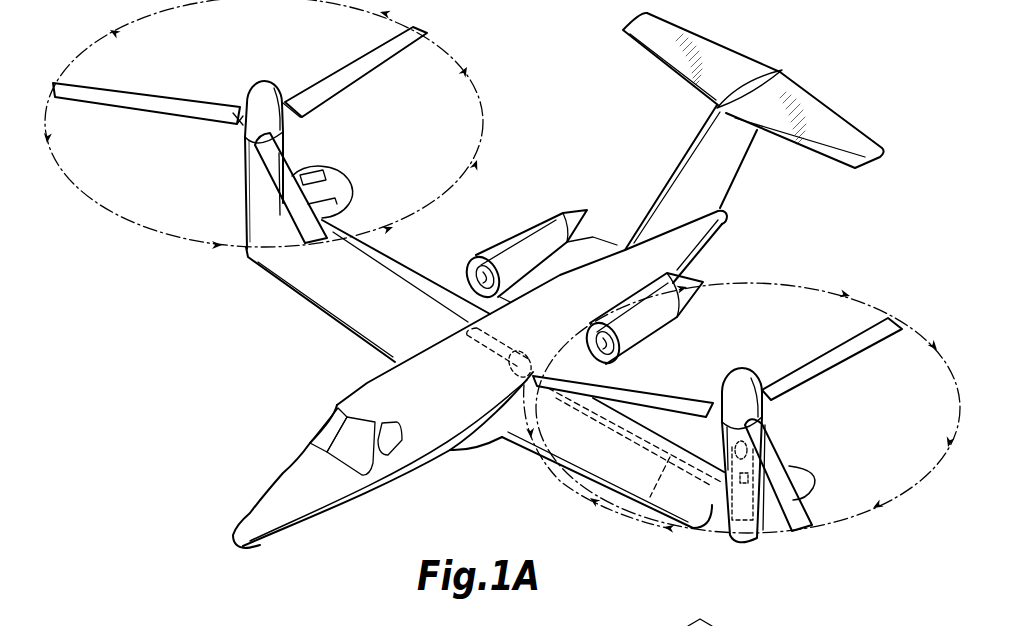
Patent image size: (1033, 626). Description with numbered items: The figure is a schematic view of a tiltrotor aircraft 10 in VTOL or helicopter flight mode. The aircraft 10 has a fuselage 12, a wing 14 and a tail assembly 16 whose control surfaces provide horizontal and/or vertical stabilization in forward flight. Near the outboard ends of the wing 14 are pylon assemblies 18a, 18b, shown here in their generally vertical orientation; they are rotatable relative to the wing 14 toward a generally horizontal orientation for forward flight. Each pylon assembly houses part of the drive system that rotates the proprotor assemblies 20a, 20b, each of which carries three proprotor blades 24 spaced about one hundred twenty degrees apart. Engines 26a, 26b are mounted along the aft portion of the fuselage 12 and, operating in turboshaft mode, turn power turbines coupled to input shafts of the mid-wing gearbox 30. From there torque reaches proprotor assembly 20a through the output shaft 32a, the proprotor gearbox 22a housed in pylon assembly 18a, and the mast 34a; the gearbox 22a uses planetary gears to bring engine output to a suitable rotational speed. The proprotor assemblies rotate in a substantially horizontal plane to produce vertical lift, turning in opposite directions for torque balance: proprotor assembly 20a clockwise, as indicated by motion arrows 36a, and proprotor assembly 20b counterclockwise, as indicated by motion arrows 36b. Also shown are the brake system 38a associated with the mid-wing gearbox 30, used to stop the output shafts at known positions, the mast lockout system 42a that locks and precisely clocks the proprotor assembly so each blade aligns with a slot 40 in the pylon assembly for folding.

The tiltrotor aircraft 10 is at (845, 76).
The fuselage 12 is at (333, 503).
The wing 14 is at (385, 282).
The tail assembly 16 is at (728, 62).
The pylon assembly 18a is at (727, 530).
The pylon assembly 18b is at (247, 198).
The proprotor assembly 20a is at (825, 374).
The proprotor assembly 20b is at (350, 96).
The proprotor gearbox 22a is at (790, 537).
The proprotor blades 24 is at (347, 72).
The engine 26a is at (653, 322).
The engine 26b is at (533, 238).
The mid-wing gearbox 30 is at (480, 370).
The output shaft 32a is at (633, 513).
The mast 34a is at (767, 433).
The motion arrows 36a is at (770, 283).
The motion arrows 36b is at (480, 87).
The brake system 38a is at (530, 357).
The slot 40 is at (317, 163).
The mast lockout system 42a is at (770, 457).